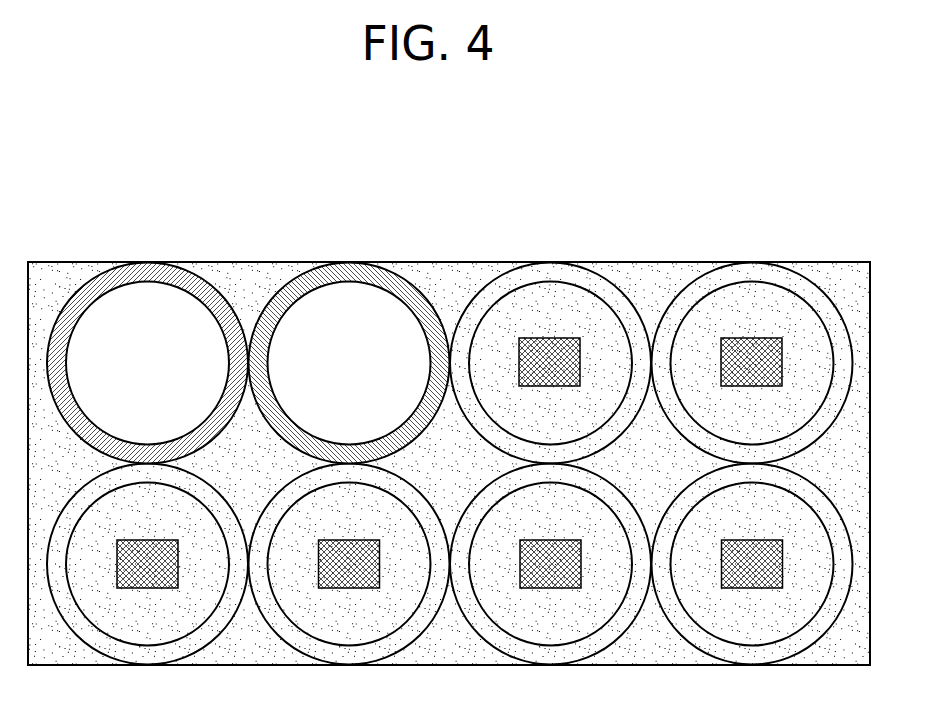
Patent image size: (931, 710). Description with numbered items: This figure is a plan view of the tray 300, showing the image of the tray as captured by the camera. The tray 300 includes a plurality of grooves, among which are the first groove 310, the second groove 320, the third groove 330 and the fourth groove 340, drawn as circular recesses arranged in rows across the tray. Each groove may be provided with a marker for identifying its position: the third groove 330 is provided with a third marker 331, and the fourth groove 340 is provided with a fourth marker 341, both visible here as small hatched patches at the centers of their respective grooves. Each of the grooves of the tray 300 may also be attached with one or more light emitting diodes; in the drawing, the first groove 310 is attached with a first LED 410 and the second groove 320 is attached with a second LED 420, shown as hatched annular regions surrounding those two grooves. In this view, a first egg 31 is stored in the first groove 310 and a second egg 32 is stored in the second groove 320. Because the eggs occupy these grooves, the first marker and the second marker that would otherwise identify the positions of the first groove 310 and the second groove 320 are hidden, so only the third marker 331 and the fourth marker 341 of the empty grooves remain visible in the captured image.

The tray 300 is at (25, 133).
The first groove 310 is at (75, 282).
The first egg 31 is at (137, 325).
The first LED 410 is at (167, 272).
The second groove 320 is at (278, 282).
The second egg 32 is at (340, 325).
The second LED 420 is at (367, 272).
The third groove 330 is at (483, 283).
The third marker 331 is at (550, 355).
The fourth groove 340 is at (682, 282).
The fourth marker 341 is at (751, 355).